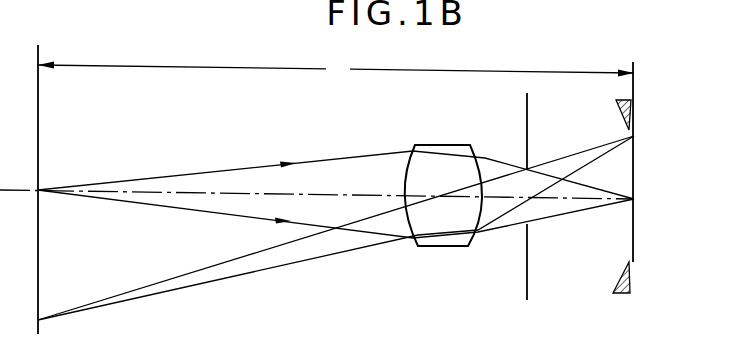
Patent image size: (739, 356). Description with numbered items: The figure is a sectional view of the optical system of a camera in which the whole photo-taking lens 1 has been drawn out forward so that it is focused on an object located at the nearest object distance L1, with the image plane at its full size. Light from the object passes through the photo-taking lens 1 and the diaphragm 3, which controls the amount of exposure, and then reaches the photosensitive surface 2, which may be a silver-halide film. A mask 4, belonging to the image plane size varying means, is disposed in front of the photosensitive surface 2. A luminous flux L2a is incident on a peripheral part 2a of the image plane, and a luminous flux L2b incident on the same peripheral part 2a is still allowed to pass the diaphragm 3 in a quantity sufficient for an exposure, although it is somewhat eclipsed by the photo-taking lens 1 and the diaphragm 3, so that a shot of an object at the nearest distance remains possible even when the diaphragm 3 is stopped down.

The photo-taking lens 1 is at (436, 145).
The photosensitive surface 2 is at (635, 176).
The peripheral part of the image plane 2a is at (635, 137).
The diaphragm 3 is at (529, 107).
The mask 4 is at (632, 281).
The nearest object distance L1 is at (336, 72).
The luminous flux L2a is at (220, 0).
The luminous flux L2b is at (185, 288).